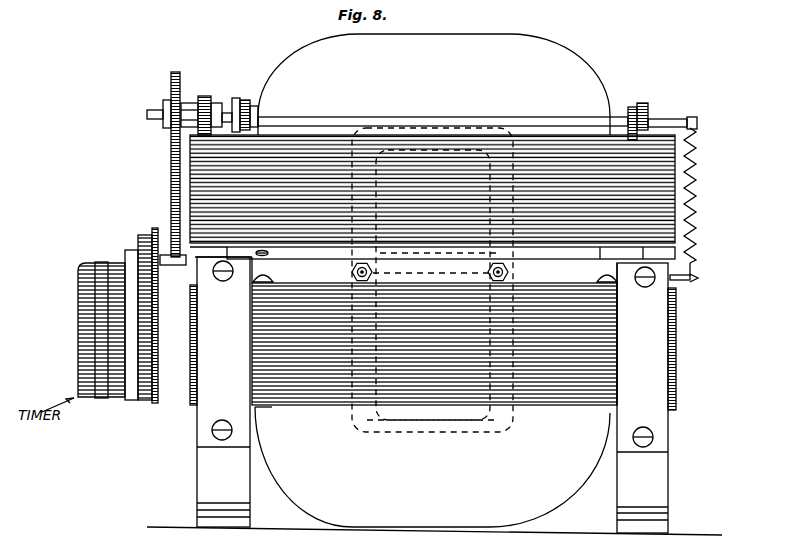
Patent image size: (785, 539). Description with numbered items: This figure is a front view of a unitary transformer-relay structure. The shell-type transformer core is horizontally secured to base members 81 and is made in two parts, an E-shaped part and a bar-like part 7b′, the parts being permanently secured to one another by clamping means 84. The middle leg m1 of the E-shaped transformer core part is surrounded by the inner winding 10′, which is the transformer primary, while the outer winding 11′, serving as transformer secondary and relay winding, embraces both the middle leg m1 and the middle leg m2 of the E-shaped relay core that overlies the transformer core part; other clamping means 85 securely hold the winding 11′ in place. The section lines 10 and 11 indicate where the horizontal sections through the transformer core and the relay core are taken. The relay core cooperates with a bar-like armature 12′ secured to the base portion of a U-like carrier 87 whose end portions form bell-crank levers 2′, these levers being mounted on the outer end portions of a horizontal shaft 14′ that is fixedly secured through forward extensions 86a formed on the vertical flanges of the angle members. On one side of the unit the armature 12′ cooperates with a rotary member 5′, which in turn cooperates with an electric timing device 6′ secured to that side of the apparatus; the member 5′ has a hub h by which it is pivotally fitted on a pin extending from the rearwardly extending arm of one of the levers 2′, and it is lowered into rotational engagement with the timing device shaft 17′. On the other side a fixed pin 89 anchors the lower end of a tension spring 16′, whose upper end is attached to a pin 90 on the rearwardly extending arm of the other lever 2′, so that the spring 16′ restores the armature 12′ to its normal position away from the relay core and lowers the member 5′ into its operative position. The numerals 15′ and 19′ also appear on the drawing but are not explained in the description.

The shaft end 15′ is at (158, 110).
The hub h is at (186, 104).
The gear 19′ is at (205, 98).
The bell-crank levers 2′ is at (234, 100).
The forward extensions 86a is at (256, 108).
The transformer secondary and relay winding 11′ is at (355, 140).
The U-like carrier 87 is at (426, 140).
The middle leg of the relay core m2 is at (465, 165).
The horizontal shaft 14′ is at (520, 122).
The pin 90 is at (681, 118).
The bar-like armature 12′ is at (693, 176).
The section line 11— 11 is at (190, 185).
The rotary member 5′ is at (171, 154).
The tension spring 16′ is at (694, 253).
The clamping means 85 is at (598, 262).
The fixed pin 89 is at (698, 278).
The timing device shaft 17′ is at (188, 265).
The electric timing device 6′ is at (88, 320).
The section line 10— 10 is at (196, 340).
The clamping means 84 is at (198, 415).
The base members 81 is at (198, 482).
The transformer primary winding 10′ is at (372, 358).
The middle leg of the transformer core part m1 is at (437, 387).
The bar-like part 7b′ is at (575, 392).